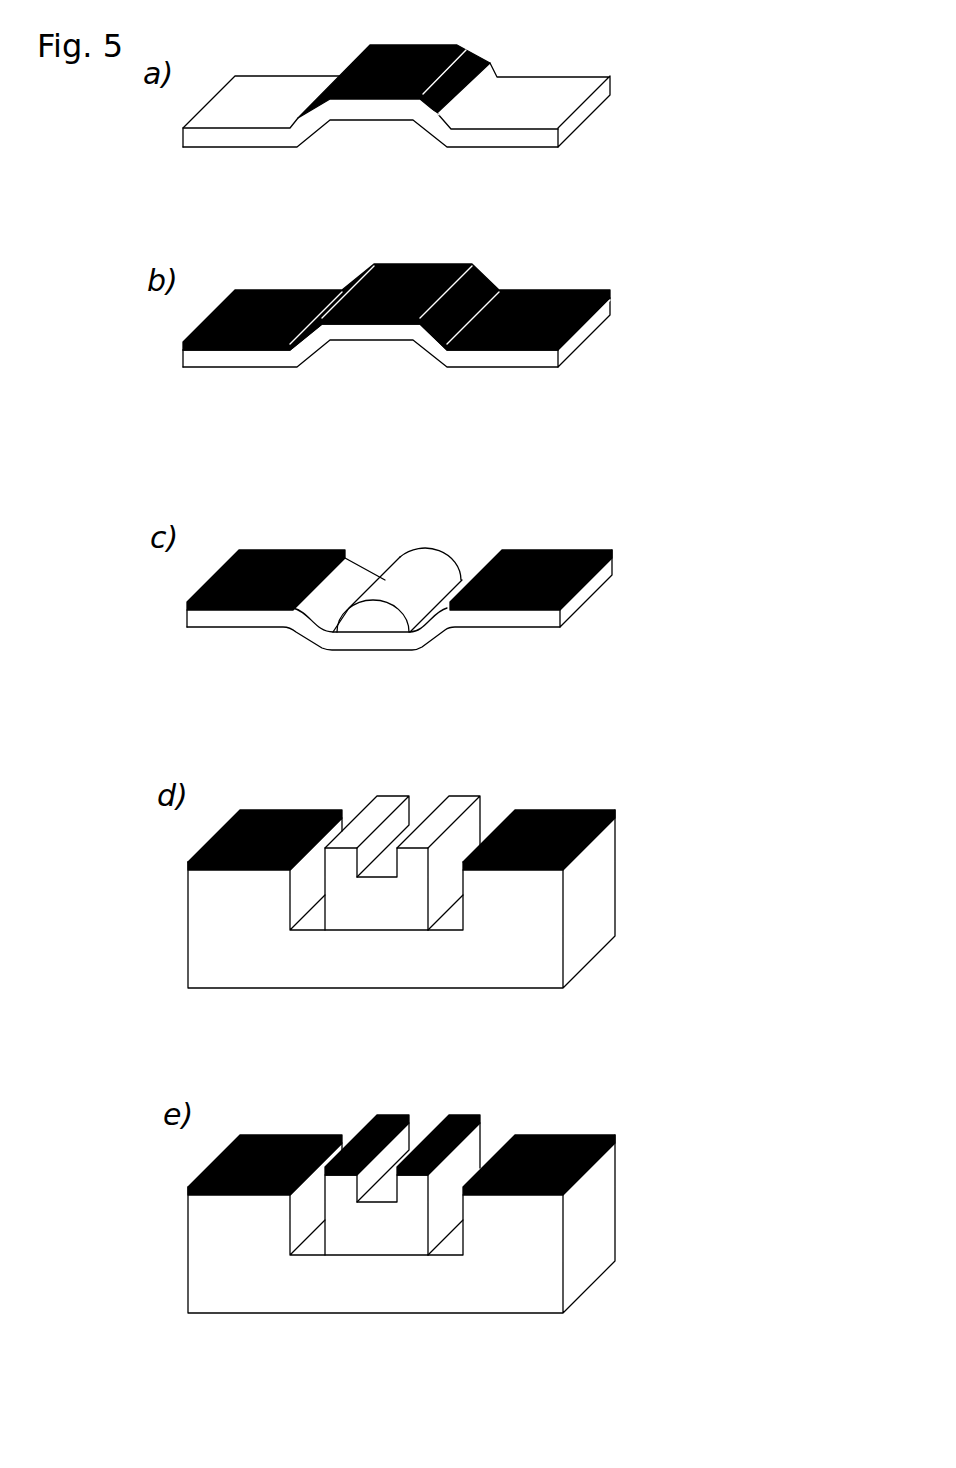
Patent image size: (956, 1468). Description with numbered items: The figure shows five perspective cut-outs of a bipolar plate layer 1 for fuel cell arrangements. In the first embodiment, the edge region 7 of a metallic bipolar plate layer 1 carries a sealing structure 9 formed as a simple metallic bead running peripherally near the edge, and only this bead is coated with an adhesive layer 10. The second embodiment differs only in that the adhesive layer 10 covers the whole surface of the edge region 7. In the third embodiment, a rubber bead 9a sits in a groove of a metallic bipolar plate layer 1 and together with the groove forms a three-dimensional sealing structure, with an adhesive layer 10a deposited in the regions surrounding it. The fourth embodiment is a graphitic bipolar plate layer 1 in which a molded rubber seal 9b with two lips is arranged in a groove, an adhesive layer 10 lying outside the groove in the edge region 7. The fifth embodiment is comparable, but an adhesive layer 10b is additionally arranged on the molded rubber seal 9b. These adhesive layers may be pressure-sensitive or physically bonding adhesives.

The bipolar plate layer 1 is at (573, 118).
The edge region 7 is at (492, 137).
The sealing structure 9 is at (375, 113).
The rubber bead 9a is at (370, 620).
The molded rubber seal 9b is at (372, 907).
The adhesive layer 10 is at (380, 70).
The adhesive layer 10a is at (313, 555).
The adhesive layer 10b is at (338, 1178).